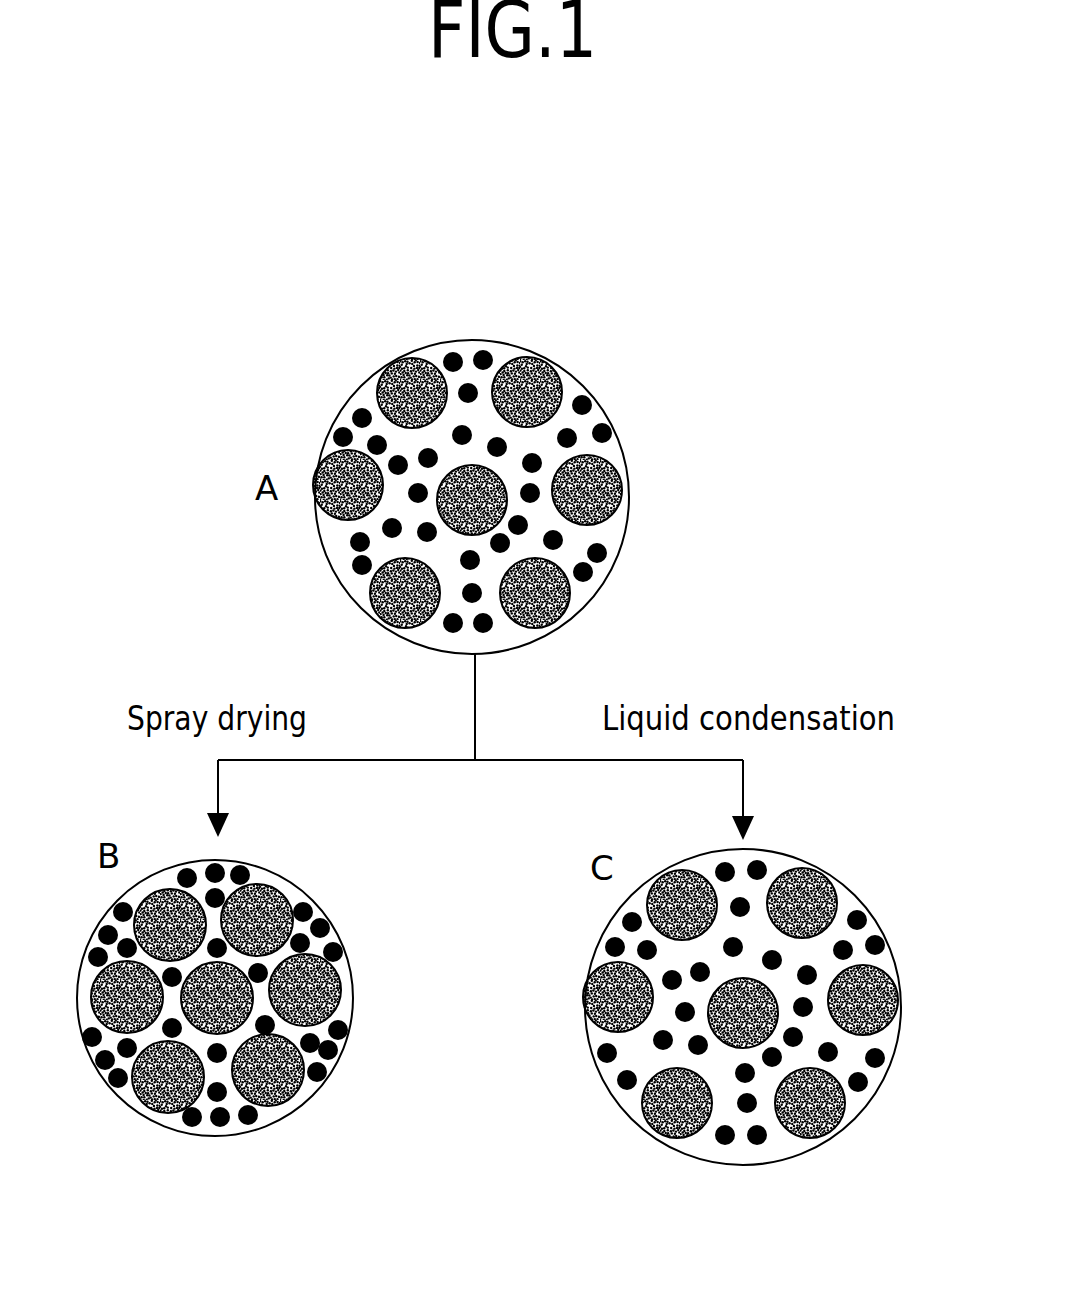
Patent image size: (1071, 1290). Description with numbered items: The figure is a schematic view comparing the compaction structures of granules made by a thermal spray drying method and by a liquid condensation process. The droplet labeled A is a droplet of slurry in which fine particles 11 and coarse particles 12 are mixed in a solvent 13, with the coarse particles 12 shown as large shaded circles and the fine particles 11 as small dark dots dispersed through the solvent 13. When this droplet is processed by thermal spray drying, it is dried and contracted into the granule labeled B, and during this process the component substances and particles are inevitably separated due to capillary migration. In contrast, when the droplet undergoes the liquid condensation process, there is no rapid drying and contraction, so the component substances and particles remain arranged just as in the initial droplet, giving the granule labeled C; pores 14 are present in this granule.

The fine particles 11 is at (602, 393).
The coarse particles 12 is at (622, 493).
The solvent 13 is at (358, 396).
The pores 14 is at (634, 1053).